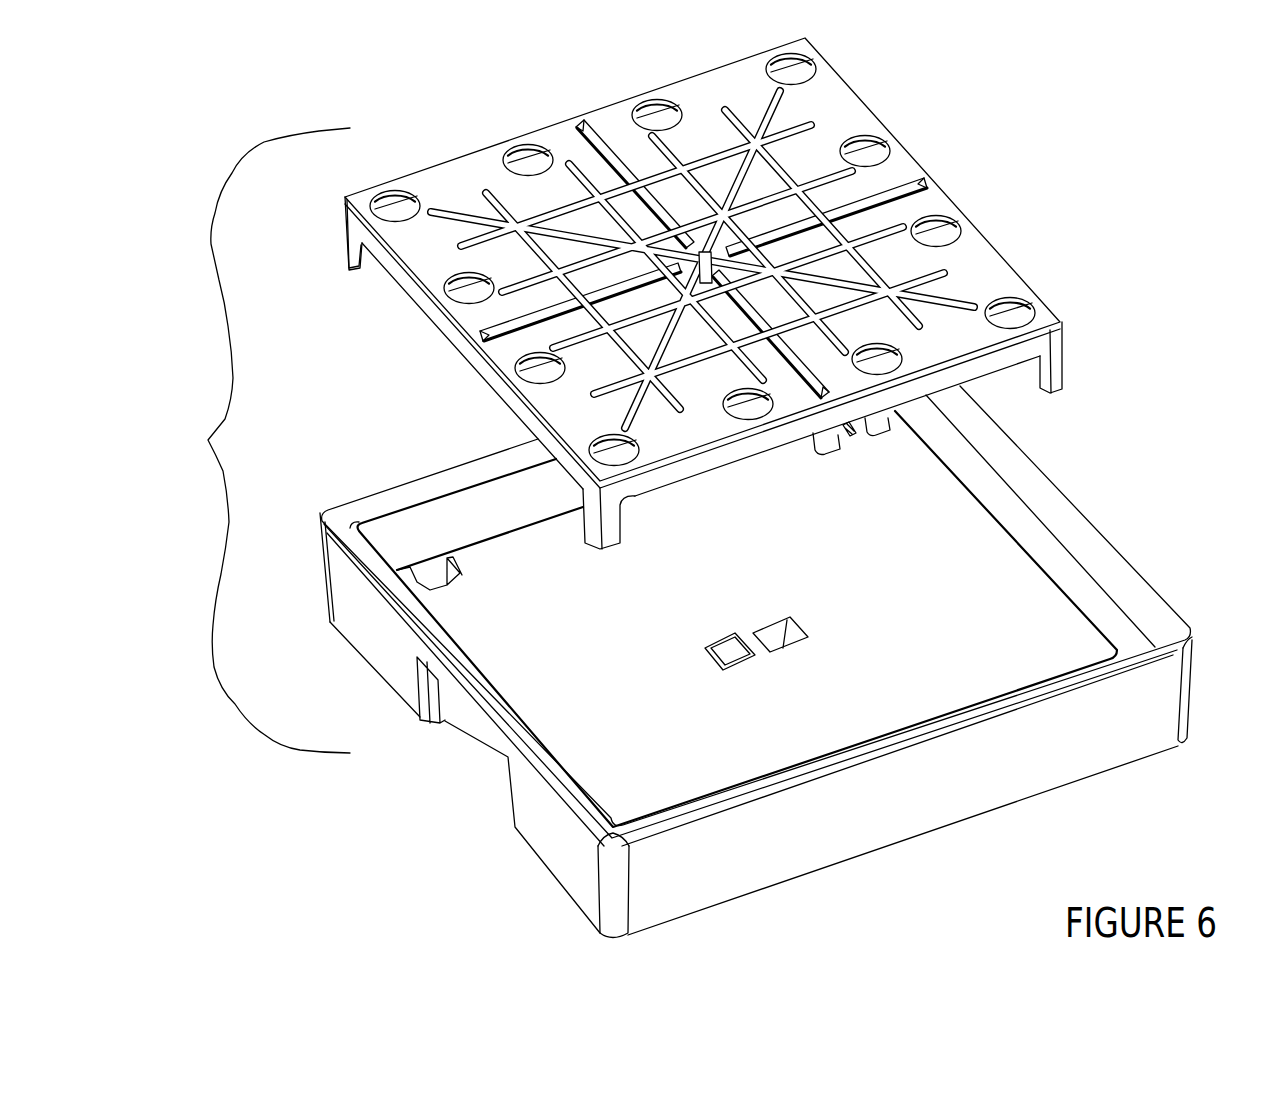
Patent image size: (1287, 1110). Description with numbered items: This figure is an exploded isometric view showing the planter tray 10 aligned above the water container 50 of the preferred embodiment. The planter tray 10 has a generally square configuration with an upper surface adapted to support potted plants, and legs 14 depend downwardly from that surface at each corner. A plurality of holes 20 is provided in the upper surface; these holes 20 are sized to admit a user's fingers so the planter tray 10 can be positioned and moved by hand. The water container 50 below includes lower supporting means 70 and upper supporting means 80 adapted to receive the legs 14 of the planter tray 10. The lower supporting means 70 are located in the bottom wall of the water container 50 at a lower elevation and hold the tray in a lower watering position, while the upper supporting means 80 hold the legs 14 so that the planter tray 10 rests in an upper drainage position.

The planter tray 10 is at (701, 293).
The legs 14 is at (345, 255).
The holes 20 is at (1040, 307).
The water container 50 is at (756, 662).
The lower supporting means 70 is at (430, 578).
The upper supporting means 80 is at (727, 658).